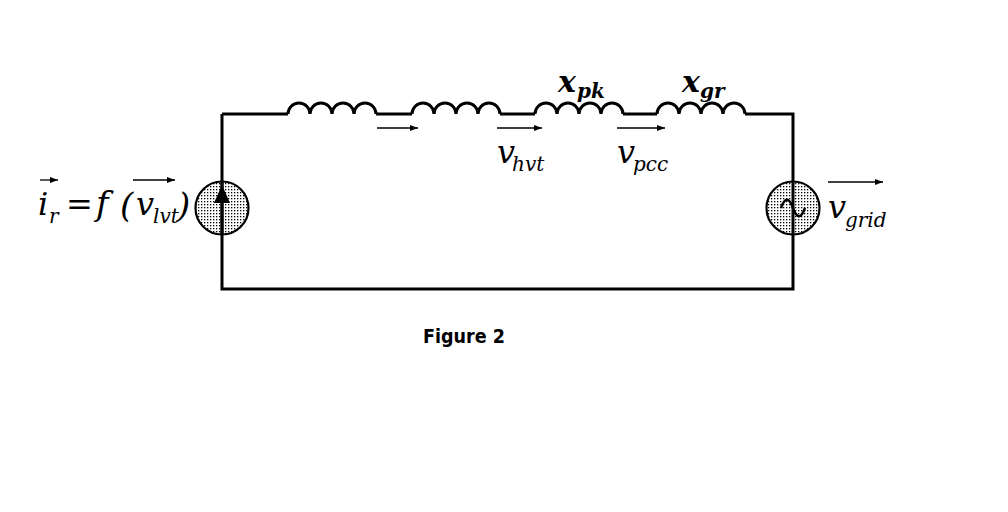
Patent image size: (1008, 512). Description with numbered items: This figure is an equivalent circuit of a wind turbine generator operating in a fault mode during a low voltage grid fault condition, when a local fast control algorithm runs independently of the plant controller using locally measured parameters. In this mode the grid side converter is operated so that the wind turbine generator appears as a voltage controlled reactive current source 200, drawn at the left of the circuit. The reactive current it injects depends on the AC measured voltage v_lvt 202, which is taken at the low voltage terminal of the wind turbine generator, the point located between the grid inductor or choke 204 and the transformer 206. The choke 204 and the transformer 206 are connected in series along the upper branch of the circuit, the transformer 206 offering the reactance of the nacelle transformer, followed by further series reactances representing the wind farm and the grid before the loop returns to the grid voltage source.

The voltage controlled reactive current source 200 is at (204, 182).
The AC measured voltage v_lvt 202 is at (373, 170).
The grid inductor or choke 204 is at (295, 102).
The transformer 206 is at (420, 100).